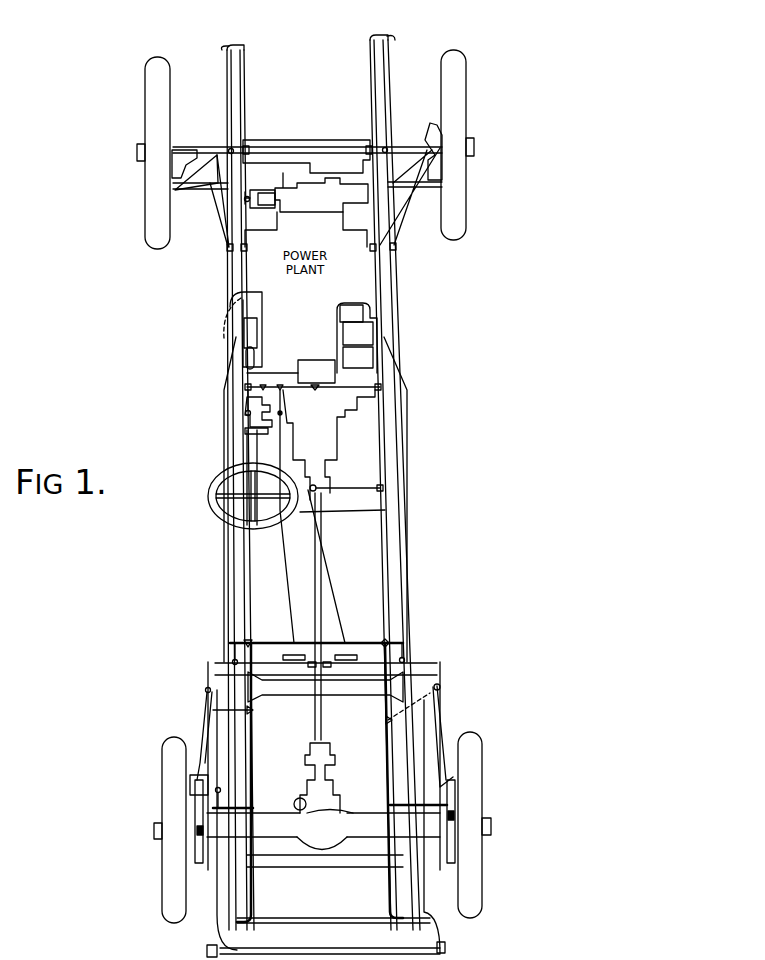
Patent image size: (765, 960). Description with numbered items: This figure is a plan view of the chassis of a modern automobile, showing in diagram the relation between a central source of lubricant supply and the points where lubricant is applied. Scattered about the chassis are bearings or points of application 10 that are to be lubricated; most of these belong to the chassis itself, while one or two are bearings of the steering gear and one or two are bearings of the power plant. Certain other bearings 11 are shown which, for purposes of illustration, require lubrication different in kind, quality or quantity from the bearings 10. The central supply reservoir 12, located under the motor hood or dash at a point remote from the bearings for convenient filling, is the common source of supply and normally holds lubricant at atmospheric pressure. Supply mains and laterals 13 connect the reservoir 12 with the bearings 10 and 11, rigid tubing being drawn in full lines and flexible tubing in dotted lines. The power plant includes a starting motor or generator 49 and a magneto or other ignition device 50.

The bearings or points of application 10 is at (390, 50).
The other bearings or points of application 11 is at (448, 815).
The central supply reservoir 12 is at (336, 373).
The supply mains and laterals 13 is at (243, 88).
The starting motor 49 is at (365, 332).
The magneto 50 is at (267, 192).